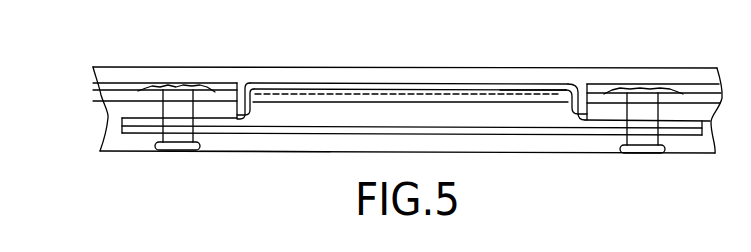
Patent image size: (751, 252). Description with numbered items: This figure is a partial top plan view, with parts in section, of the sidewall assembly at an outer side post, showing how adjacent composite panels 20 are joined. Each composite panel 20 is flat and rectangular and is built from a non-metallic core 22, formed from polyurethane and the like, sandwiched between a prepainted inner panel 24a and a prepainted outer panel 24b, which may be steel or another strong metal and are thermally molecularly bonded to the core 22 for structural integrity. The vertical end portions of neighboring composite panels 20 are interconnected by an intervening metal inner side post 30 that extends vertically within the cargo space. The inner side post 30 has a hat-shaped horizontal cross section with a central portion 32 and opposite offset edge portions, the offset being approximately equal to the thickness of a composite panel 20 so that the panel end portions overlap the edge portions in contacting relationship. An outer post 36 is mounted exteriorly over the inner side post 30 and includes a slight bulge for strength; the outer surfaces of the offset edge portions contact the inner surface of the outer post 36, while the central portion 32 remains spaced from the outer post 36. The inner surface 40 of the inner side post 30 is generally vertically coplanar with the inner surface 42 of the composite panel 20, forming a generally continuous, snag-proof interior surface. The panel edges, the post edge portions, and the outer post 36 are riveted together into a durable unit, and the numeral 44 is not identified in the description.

The composite panel 20 is at (223, 67).
The non-metallic core 22 is at (117, 108).
The inner panel 24a is at (94, 87).
The outer panel 24b is at (108, 118).
The inner side post 30 is at (489, 82).
The central portion 32 is at (546, 89).
The outer post 36 is at (264, 143).
The inner surface of inner post 40 is at (295, 83).
The inner surface of panel 42 is at (136, 87).
The via 44 is at (182, 100).